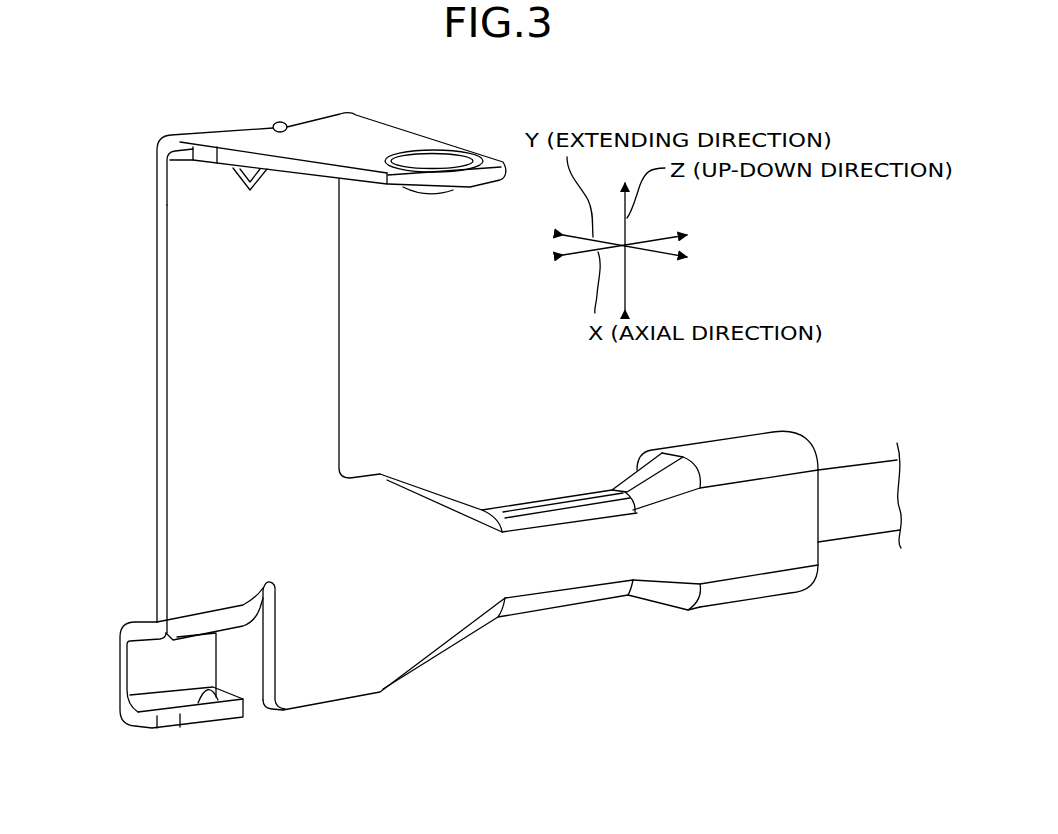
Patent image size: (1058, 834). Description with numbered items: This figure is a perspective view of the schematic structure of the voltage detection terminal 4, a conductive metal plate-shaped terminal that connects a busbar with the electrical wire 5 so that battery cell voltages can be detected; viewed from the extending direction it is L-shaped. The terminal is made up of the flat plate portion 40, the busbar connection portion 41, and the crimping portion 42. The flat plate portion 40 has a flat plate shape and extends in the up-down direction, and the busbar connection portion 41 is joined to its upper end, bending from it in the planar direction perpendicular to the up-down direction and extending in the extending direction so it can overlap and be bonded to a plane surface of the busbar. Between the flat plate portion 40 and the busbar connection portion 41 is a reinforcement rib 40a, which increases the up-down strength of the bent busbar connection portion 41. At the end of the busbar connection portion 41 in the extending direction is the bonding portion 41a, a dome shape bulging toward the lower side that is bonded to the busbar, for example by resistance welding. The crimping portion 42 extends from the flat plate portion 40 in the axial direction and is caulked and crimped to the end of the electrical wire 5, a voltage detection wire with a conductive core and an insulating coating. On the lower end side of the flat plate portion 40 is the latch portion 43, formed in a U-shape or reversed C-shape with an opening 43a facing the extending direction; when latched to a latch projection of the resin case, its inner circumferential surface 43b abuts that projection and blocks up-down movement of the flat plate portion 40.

The voltage detection terminal 4 is at (158, 116).
The flat plate portion 40 is at (218, 248).
The reinforcement rib 40a is at (240, 172).
The busbar connection portion 41 is at (373, 132).
The bonding portion 41a is at (430, 197).
The crimping portion 42 is at (738, 527).
The latch portion 43 is at (117, 678).
The opening 43a is at (213, 695).
The inner circumferential surface 43b is at (173, 643).
The electrical wire 5 is at (856, 472).